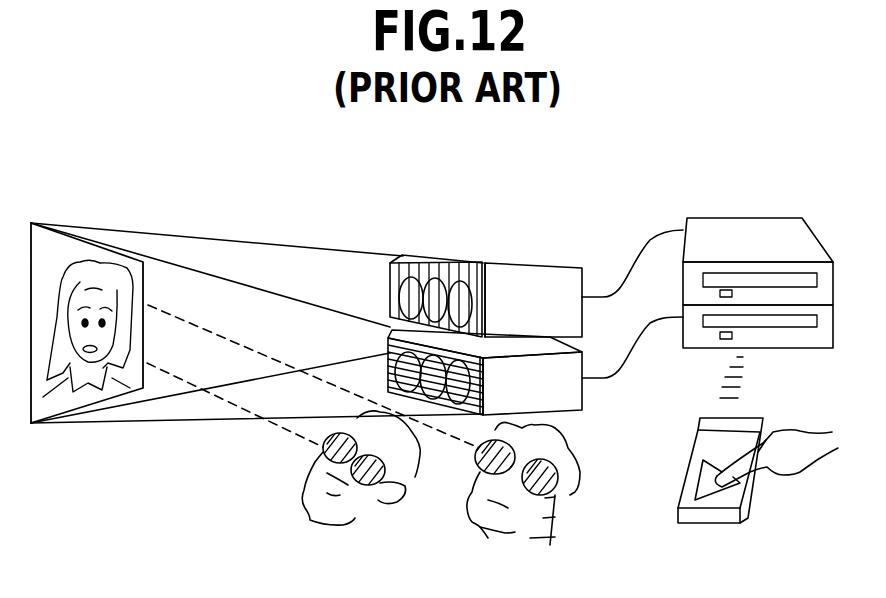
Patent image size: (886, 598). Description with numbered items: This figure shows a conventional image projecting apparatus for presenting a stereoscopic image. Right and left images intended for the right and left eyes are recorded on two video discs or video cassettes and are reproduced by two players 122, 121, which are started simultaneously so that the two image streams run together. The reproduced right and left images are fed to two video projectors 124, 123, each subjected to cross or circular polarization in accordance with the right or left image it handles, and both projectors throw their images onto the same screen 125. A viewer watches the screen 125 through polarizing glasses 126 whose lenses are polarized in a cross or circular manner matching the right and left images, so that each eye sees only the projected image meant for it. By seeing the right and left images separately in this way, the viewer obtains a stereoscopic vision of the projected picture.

The player 121 is at (807, 348).
The player 122 is at (755, 228).
The video projector 123 is at (568, 395).
The video projector 124 is at (527, 268).
The screen 125 is at (110, 250).
The polarizing glasses 126 is at (480, 472).